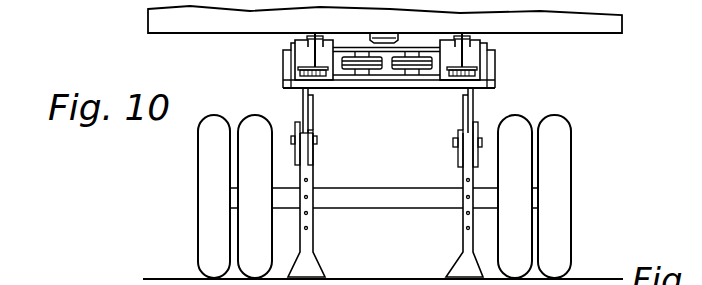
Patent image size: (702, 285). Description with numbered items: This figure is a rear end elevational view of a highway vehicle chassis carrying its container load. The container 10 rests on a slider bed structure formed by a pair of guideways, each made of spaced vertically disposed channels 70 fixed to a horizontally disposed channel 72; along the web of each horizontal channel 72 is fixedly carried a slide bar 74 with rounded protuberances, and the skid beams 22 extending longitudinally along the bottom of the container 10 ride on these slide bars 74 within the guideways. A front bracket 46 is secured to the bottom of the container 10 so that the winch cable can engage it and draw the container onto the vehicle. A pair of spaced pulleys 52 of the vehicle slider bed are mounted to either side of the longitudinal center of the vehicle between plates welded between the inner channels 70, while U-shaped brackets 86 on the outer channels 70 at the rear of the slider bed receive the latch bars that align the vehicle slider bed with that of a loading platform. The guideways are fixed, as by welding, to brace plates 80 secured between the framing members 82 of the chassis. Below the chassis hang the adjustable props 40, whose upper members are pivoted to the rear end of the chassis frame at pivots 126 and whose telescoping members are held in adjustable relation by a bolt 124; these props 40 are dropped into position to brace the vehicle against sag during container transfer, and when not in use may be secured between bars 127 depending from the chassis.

The container 10 is at (622, 23).
The skid beam 22 is at (310, 37).
The front bracket 46 is at (388, 37).
The pulleys 52 is at (379, 69).
The vertically disposed channel 70 is at (294, 72).
The horizontally disposed channel 72 is at (463, 79).
The slide bar 74 is at (315, 73).
The brace plate 80 is at (353, 88).
The framing member 82 is at (302, 102).
The U-shaped bracket 86 is at (280, 65).
The bolt 124 is at (307, 213).
The pivot 126 is at (318, 143).
The bars 127 is at (314, 162).
The adjustable prop 40 is at (309, 228).